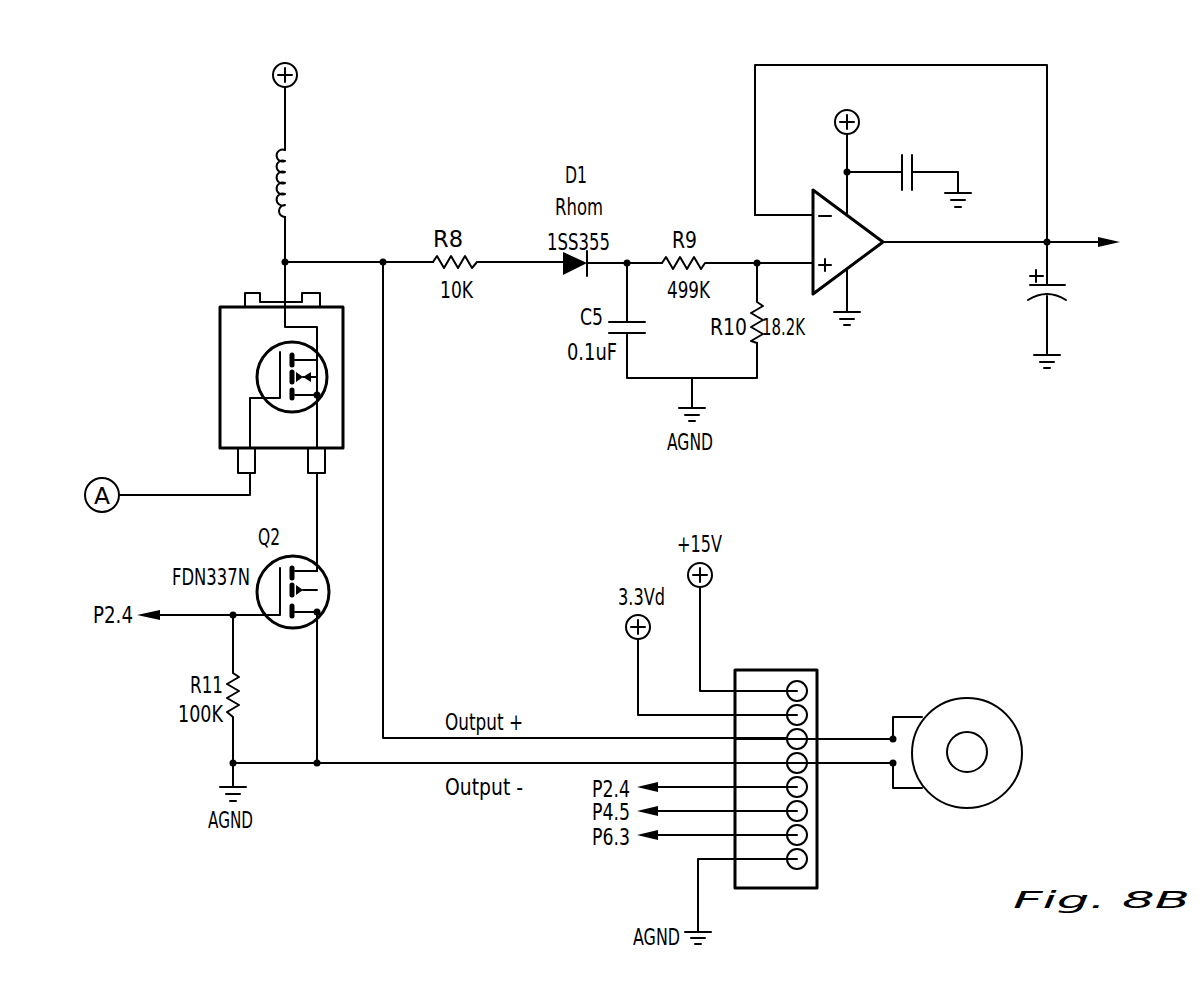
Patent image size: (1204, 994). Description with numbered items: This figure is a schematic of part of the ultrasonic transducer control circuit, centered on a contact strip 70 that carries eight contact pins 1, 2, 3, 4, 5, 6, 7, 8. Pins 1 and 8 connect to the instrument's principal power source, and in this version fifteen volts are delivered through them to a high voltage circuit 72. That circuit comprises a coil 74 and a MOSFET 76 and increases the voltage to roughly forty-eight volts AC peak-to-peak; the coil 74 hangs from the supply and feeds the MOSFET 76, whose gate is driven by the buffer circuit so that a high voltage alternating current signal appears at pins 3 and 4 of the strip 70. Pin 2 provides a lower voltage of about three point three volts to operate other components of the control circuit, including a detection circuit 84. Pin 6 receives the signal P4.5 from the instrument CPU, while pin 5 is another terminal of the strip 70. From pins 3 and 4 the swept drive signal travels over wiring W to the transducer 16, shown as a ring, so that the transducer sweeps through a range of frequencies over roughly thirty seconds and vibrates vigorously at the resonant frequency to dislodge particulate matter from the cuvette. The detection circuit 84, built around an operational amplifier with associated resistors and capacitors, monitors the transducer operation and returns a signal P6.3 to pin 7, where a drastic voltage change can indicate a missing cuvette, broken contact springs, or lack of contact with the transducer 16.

The high voltage circuit 72 is at (248, 143).
The coil 74 is at (277, 181).
The MOSFET 76 is at (220, 398).
The detection circuit 84 is at (1073, 132).
The contact strip 70 is at (792, 668).
The transducer 16 is at (990, 698).
The wiring W is at (905, 703).
The contact pin 1 is at (803, 691).
The contact pin 2 is at (803, 715).
The contact pin 3 is at (803, 739).
The contact pin 4 is at (803, 765).
The contact pin 5 is at (803, 789).
The contact pin 6 is at (803, 813).
The contact pin 7 is at (803, 837).
The contact pin 8 is at (803, 861).